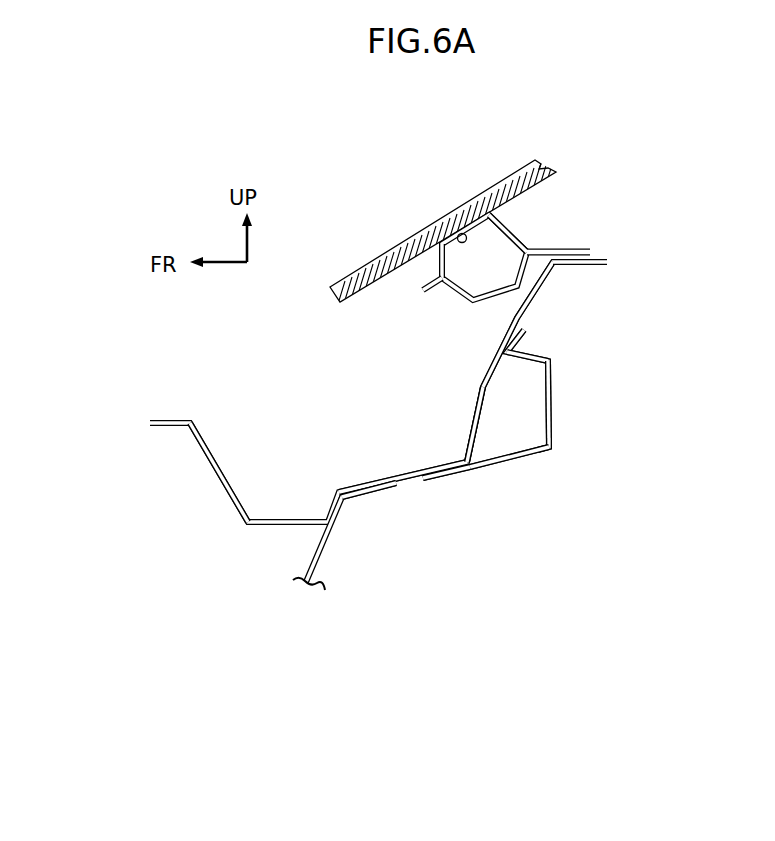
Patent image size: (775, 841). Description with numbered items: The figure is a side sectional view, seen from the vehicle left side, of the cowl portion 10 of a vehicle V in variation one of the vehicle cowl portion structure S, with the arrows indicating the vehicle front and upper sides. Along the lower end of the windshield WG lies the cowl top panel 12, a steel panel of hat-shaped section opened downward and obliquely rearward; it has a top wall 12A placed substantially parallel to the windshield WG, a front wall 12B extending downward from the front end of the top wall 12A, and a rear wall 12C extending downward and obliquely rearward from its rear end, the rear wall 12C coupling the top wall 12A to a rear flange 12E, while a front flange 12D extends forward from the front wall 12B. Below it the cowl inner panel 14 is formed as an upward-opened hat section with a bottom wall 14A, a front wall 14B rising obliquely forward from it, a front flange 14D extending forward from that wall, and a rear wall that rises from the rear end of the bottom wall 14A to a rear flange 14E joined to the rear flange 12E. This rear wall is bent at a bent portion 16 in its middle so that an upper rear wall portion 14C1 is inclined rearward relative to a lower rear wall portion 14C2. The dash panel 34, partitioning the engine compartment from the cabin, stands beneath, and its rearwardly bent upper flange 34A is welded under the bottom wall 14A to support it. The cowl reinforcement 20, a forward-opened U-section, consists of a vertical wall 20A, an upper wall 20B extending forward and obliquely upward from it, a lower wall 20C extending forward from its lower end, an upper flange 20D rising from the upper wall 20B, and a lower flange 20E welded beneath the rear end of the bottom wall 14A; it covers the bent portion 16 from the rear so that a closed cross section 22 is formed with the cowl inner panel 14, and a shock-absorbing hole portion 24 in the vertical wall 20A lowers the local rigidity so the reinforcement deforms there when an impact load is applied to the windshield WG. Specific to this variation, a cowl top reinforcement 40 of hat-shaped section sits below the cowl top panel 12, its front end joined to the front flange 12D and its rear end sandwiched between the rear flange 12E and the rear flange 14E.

The cowl portion 10 is at (307, 343).
The cowl top panel 12 is at (519, 229).
The top wall 12A is at (458, 226).
The front wall 12B is at (437, 264).
The rear wall 12C is at (490, 216).
The front flange 12D is at (426, 275).
The rear flange 12E is at (573, 249).
The cowl inner panel 14 is at (203, 462).
The bottom wall 14A is at (350, 484).
The front wall 14B is at (222, 470).
The upper rear wall portion 14C1 is at (545, 285).
The lower rear wall portion 14C2 is at (468, 432).
The front flange 14D is at (173, 418).
The rear flange 14E is at (603, 265).
The bent portion 16 is at (476, 385).
The cowl reinforcement 20 is at (552, 462).
The vertical wall 20A is at (554, 445).
The upper wall 20B is at (538, 353).
The lower wall 20C is at (510, 464).
The upper flange 20D is at (518, 342).
The lower flange 20E is at (443, 479).
The closed cross section 22 is at (533, 423).
The hole portion 24 is at (554, 395).
The dash panel 34 is at (318, 572).
The upper flange 34A is at (372, 497).
The cowl top reinforcement 40 is at (453, 301).
The windshield WG is at (476, 197).
The vehicle V is at (309, 230).
The vehicle cowl portion structure S is at (294, 388).